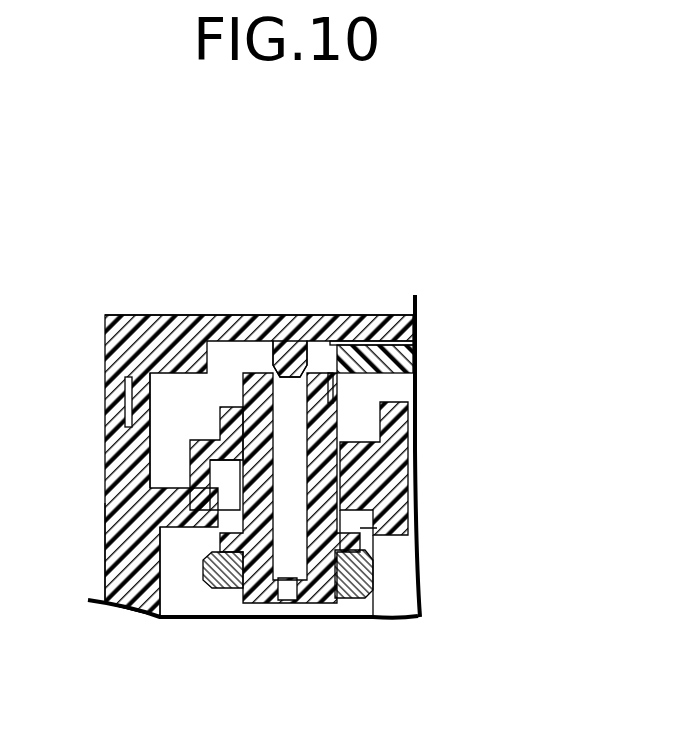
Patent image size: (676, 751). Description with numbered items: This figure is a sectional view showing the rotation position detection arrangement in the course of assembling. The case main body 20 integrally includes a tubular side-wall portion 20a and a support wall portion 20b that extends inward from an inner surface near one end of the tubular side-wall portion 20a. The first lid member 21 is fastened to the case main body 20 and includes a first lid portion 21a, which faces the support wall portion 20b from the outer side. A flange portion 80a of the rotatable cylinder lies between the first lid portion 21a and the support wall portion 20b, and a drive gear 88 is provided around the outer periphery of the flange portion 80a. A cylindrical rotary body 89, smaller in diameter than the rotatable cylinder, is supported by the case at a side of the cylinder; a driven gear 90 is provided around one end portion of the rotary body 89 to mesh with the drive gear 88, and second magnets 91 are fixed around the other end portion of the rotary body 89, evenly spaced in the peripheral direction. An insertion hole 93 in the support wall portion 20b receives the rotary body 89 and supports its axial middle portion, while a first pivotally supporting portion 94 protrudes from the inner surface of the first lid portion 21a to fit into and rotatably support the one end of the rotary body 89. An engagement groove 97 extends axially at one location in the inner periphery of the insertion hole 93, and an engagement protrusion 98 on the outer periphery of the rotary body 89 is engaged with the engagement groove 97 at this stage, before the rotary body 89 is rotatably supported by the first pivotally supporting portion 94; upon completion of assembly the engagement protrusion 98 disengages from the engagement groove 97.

The case main body 20 is at (90, 585).
The tubular side-wall portion 20a is at (108, 555).
The support wall portion 20b is at (385, 452).
The first lid member 21 is at (345, 304).
The first lid portion 21a is at (175, 316).
The flange portion 80a is at (373, 355).
The drive gear 88 is at (330, 357).
The rotary body 89 is at (245, 384).
The driven gear 90 is at (247, 390).
The second magnets 91 is at (218, 572).
The insertion hole 93 is at (358, 488).
The first pivotally supporting portion 94 is at (273, 362).
The engagement groove 97 is at (212, 474).
The engagement protrusion 98 is at (217, 420).